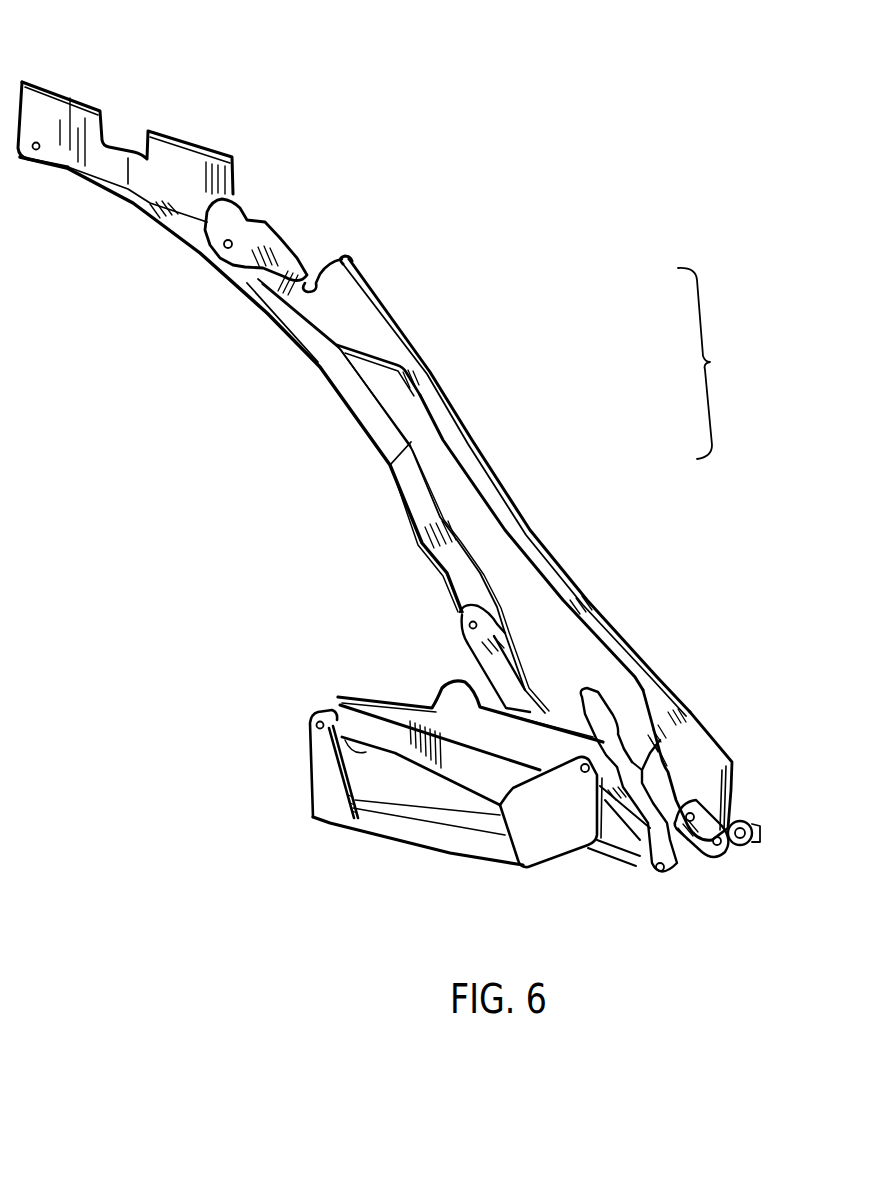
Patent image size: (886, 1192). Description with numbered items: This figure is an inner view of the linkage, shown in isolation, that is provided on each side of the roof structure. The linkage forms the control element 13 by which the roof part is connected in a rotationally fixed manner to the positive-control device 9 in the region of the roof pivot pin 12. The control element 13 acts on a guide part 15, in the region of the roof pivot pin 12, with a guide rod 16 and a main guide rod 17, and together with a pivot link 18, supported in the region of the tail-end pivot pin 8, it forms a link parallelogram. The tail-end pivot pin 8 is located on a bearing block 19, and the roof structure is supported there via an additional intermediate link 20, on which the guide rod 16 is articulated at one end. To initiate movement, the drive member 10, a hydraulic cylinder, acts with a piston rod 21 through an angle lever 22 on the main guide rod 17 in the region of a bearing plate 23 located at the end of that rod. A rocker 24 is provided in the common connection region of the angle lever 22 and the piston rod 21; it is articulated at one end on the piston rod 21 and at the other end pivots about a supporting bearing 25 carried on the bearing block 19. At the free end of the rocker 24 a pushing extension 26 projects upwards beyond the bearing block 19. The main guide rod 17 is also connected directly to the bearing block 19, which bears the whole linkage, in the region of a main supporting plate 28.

The tail-end pivot pin 8 is at (397, 776).
The positive-control device 9 is at (710, 362).
The drive member 10 is at (395, 753).
The roof pivot pin 12 is at (246, 203).
The control element 13 is at (355, 436).
The guide part 15 is at (77, 97).
The guide rod 16 is at (326, 366).
The main guide rod 17 is at (493, 482).
The pivot link 18 is at (752, 823).
The bearing block 19 is at (320, 826).
The intermediate link 20 is at (490, 650).
The piston rod 21 is at (623, 838).
The angle lever 22 is at (692, 852).
The bearing plate 23 is at (697, 748).
The rocker 24 is at (657, 830).
The supporting bearing 25 is at (527, 823).
The pushing extension 26 is at (597, 692).
The main supporting plate 28 is at (480, 740).